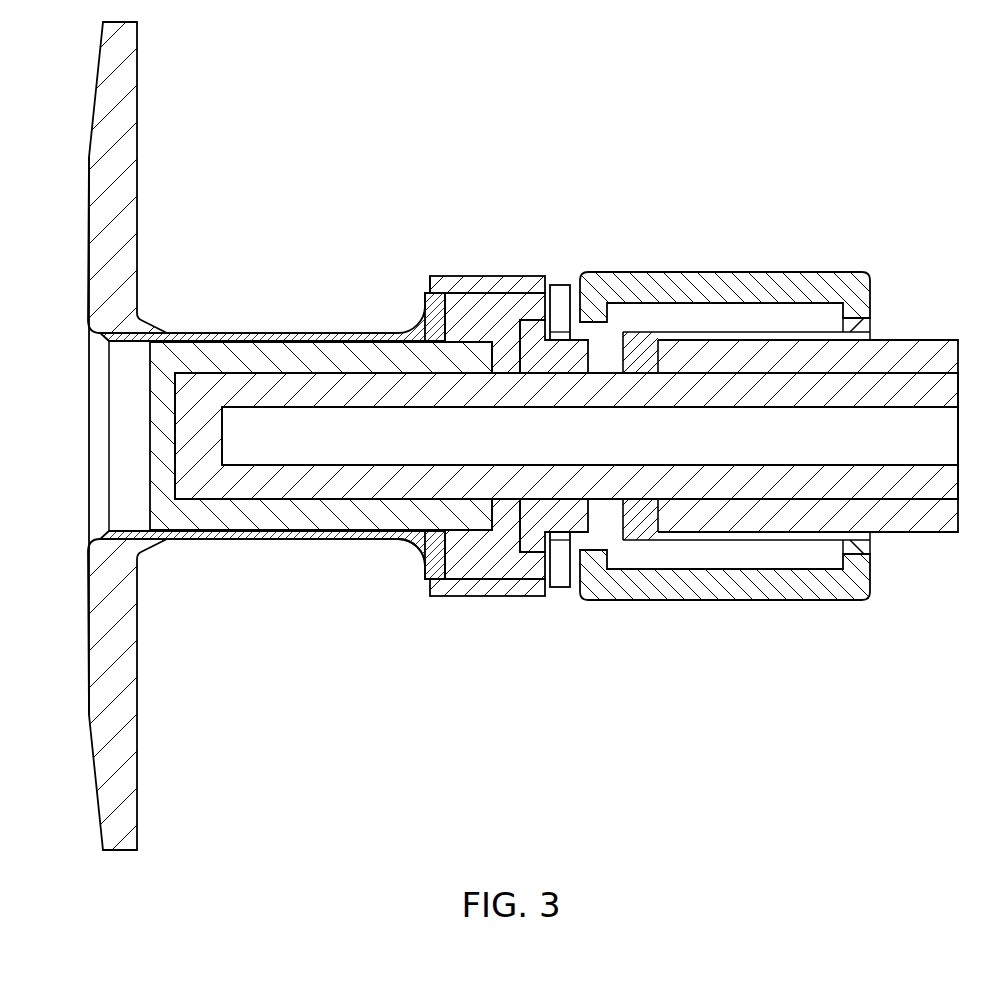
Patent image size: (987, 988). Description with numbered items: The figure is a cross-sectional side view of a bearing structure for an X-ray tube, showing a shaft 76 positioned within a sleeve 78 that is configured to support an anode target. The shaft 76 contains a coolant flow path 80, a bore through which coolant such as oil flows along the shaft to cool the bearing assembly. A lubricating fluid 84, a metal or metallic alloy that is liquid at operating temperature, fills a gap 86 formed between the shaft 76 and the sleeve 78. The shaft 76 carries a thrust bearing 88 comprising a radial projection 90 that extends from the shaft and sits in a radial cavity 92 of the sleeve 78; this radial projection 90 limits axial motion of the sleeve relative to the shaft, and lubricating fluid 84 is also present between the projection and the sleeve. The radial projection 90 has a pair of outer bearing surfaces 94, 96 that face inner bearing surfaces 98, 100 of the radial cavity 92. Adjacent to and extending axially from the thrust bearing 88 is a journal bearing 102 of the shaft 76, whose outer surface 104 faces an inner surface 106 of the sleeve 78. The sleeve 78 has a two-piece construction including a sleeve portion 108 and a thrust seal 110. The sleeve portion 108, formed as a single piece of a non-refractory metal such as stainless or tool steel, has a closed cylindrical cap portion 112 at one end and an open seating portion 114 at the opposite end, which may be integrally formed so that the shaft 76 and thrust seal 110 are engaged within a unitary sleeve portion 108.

The shaft 76 is at (344, 490).
The sleeve 78 is at (326, 323).
The coolant flow path 80 is at (387, 458).
The lubricating fluid 84 is at (212, 496).
The gap 86 is at (282, 500).
The thrust bearing 88 is at (478, 520).
The radial projection 90 is at (520, 566).
The radial cavity 92 is at (505, 556).
The outer bearing surface 94 is at (488, 300).
The outer bearing surface 96 is at (506, 300).
The inner bearing surface 98 is at (432, 295).
The inner bearing surface 100 is at (559, 284).
The journal bearing 102 is at (289, 350).
The outer surface 104 is at (225, 395).
The inner surface 106 is at (135, 330).
The sleeve portion 108 is at (363, 350).
The thrust seal 110 is at (565, 358).
The cap portion 112 is at (417, 547).
The seating portion 114 is at (457, 290).